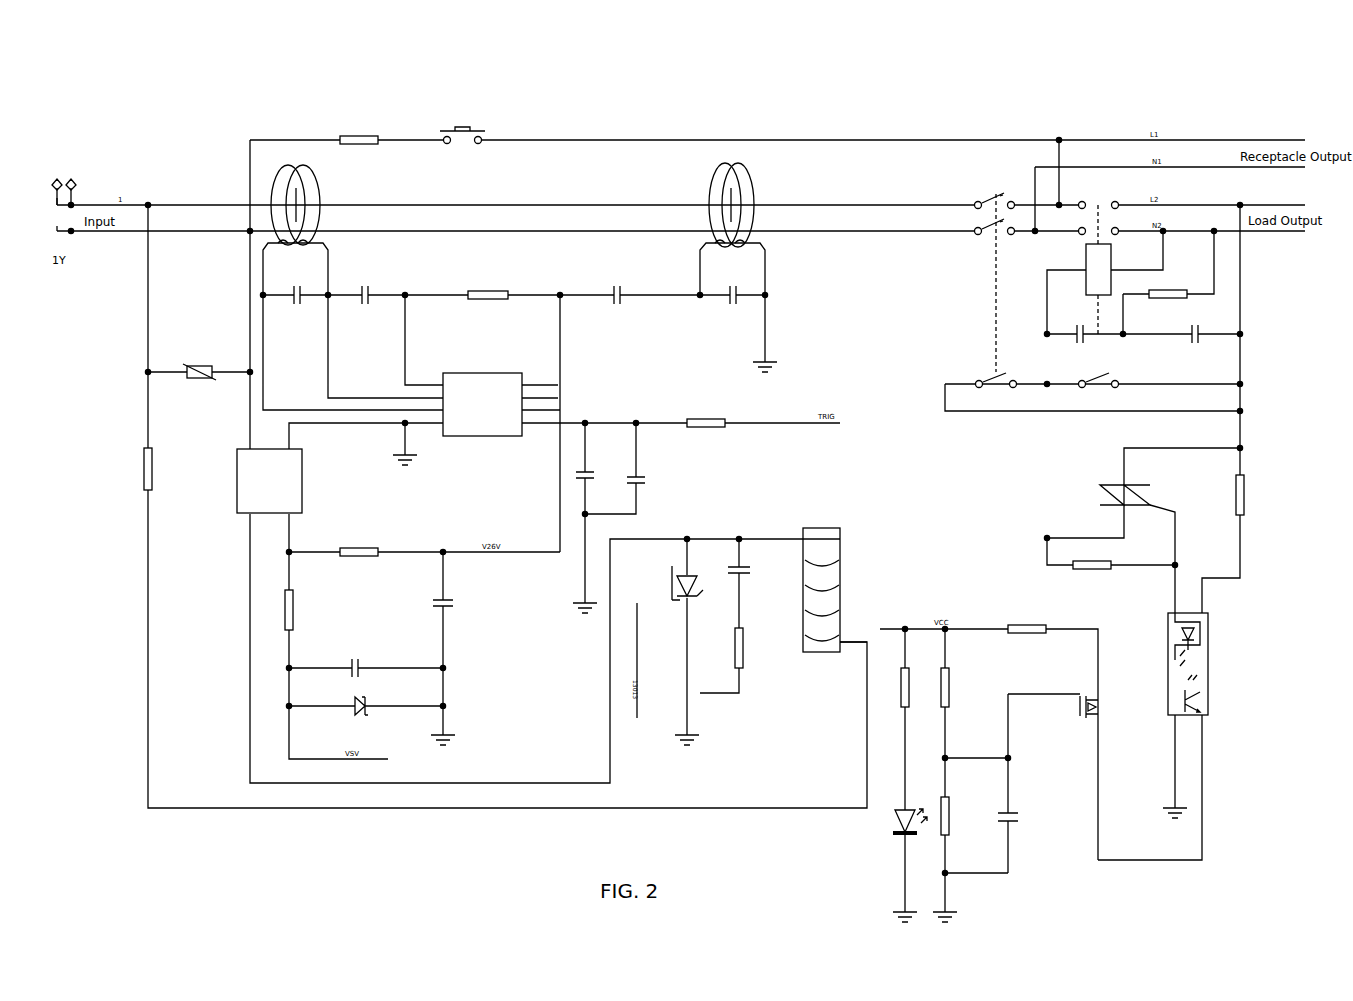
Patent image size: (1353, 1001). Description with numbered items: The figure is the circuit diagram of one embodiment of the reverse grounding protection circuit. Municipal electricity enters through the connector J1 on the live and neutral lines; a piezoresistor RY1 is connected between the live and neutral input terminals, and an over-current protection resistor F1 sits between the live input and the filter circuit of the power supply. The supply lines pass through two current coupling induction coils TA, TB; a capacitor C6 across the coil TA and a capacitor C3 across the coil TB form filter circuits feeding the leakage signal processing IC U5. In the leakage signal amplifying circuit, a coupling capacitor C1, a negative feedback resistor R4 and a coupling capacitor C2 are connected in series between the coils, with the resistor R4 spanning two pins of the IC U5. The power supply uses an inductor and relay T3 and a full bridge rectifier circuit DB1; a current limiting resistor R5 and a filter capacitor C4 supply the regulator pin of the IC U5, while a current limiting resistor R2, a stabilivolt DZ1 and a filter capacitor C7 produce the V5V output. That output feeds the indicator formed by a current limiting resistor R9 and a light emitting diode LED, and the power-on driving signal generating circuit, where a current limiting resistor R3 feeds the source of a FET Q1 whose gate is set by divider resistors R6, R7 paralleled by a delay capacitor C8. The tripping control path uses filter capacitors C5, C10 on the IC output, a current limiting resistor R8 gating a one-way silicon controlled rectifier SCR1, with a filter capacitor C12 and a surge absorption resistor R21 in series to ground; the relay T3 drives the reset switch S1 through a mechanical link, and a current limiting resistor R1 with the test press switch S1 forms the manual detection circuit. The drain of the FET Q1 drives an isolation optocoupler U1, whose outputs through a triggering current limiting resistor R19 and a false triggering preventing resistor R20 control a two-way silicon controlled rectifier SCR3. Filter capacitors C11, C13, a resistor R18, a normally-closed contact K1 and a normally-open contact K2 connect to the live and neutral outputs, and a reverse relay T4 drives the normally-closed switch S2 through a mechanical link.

The input connector J1 is at (61, 192).
The current coupling induction coil TA is at (294, 217).
The current coupling induction coil TB is at (727, 228).
The current limiting resistor R1 is at (359, 140).
The reset switch S1 is at (729, 243).
The normally-closed switch S2 is at (1099, 257).
The reverse relay T4 is at (1105, 282).
The resistor R18 is at (1168, 282).
The filter capacitor C11 is at (1086, 330).
The filter capacitor C13 is at (1206, 332).
The normally-closed contact K1 is at (992, 377).
The normally-open contact K2 is at (1096, 376).
The two-way silicon controlled rectifier SCR3 is at (1142, 530).
The triggering current limiting resistor R19 is at (1257, 494).
The false triggering preventing resistor R20 is at (1112, 562).
The heavy and light current isolation optocoupler U1 is at (1174, 728).
The current limiting resistor R3 is at (1027, 627).
The FET Q1 is at (1082, 702).
The current limiting resistor R9 is at (918, 681).
The divider resistor R6 is at (971, 681).
The divider resistor R7 is at (977, 825).
The delay capacitor C8 is at (1017, 783).
The light emitting diode indicator LED is at (914, 840).
The capacitor C6 is at (295, 293).
The coupling capacitor C1 is at (363, 293).
The negative feedback resistor R4 is at (486, 299).
The coupling capacitor C2 is at (617, 294).
The capacitor C3 is at (733, 294).
The leakage signal processing IC U5 is at (424, 423).
The current limiting resistor R8 is at (704, 423).
The filter capacitor C5 is at (587, 518).
The filter capacitor C10 is at (641, 468).
The piezoresistor RY1 is at (198, 371).
The over-current protection resistor F1 is at (156, 468).
The rectifier circuit DB1 is at (284, 481).
The current limiting resistor R5 is at (424, 553).
The current limiting resistor R2 is at (301, 609).
The filter capacitor C4 is at (468, 648).
The filter capacitor C7 is at (366, 659).
The stabilivolt DZ1 is at (366, 701).
The one-way silicon controlled rectifier SCR1 is at (691, 642).
The filter capacitor C12 is at (766, 583).
The surge absorption resistor R21 is at (739, 660).
The relay T3 is at (827, 588).